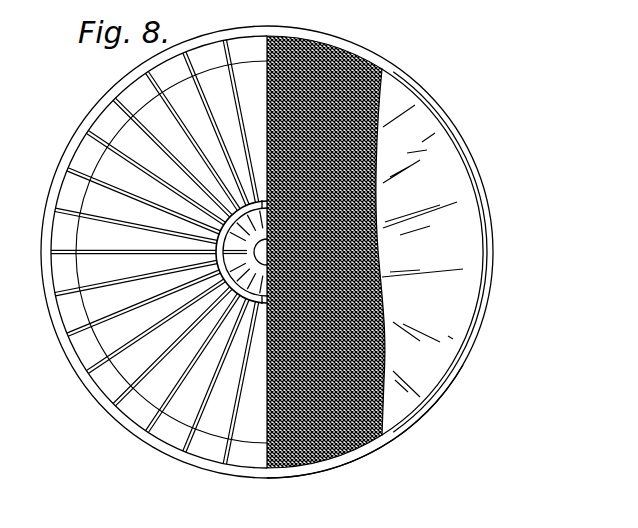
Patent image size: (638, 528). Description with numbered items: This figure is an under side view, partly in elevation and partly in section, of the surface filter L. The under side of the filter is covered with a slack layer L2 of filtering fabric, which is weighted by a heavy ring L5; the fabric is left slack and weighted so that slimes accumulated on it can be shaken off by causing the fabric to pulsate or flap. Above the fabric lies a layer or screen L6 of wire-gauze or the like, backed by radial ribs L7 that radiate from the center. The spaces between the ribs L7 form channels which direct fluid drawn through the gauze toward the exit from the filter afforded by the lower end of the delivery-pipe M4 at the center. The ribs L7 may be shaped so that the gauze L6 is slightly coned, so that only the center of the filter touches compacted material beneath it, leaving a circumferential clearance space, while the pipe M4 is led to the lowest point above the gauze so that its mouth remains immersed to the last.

The surface filter L is at (267, 252).
The slack layer of filtering fabric L2 is at (434, 252).
The heavy ring L5 is at (258, 306).
The layer or screen of wire-gauze L6 is at (353, 451).
The radial ribs L7 is at (145, 250).
The delivery-pipe M4 is at (216, 288).